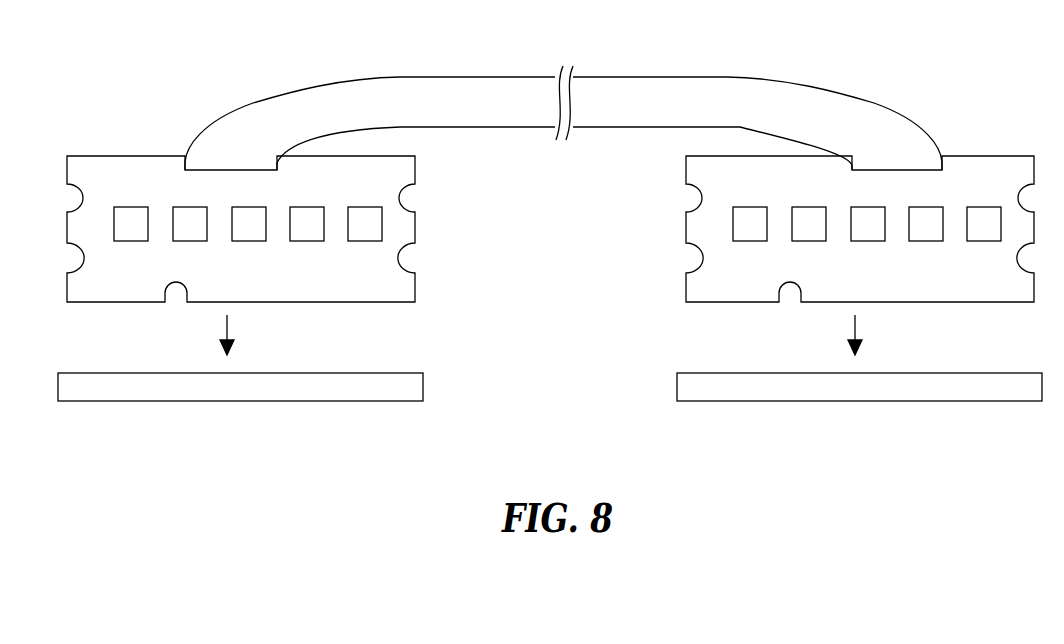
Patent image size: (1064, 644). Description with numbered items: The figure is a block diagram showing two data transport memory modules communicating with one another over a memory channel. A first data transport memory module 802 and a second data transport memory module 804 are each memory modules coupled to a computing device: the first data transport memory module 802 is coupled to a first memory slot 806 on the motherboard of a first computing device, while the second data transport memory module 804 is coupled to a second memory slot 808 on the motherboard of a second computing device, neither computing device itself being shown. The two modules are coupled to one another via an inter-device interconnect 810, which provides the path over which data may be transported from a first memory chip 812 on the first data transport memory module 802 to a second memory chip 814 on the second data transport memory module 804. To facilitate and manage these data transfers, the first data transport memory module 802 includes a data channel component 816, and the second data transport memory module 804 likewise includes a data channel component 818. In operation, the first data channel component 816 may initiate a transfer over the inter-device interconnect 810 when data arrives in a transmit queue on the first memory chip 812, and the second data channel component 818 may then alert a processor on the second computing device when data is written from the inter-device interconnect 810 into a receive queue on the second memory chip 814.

The first data transport memory module 802 is at (279, 229).
The second data transport memory module 804 is at (818, 229).
The first memory slot 806 is at (238, 402).
The second memory slot 808 is at (875, 402).
The inter-device interconnect 810 is at (433, 80).
The first memory chip 812 is at (131, 214).
The second memory chip 814 is at (750, 214).
The data channel component 816 is at (365, 214).
The data channel component 818 is at (984, 214).